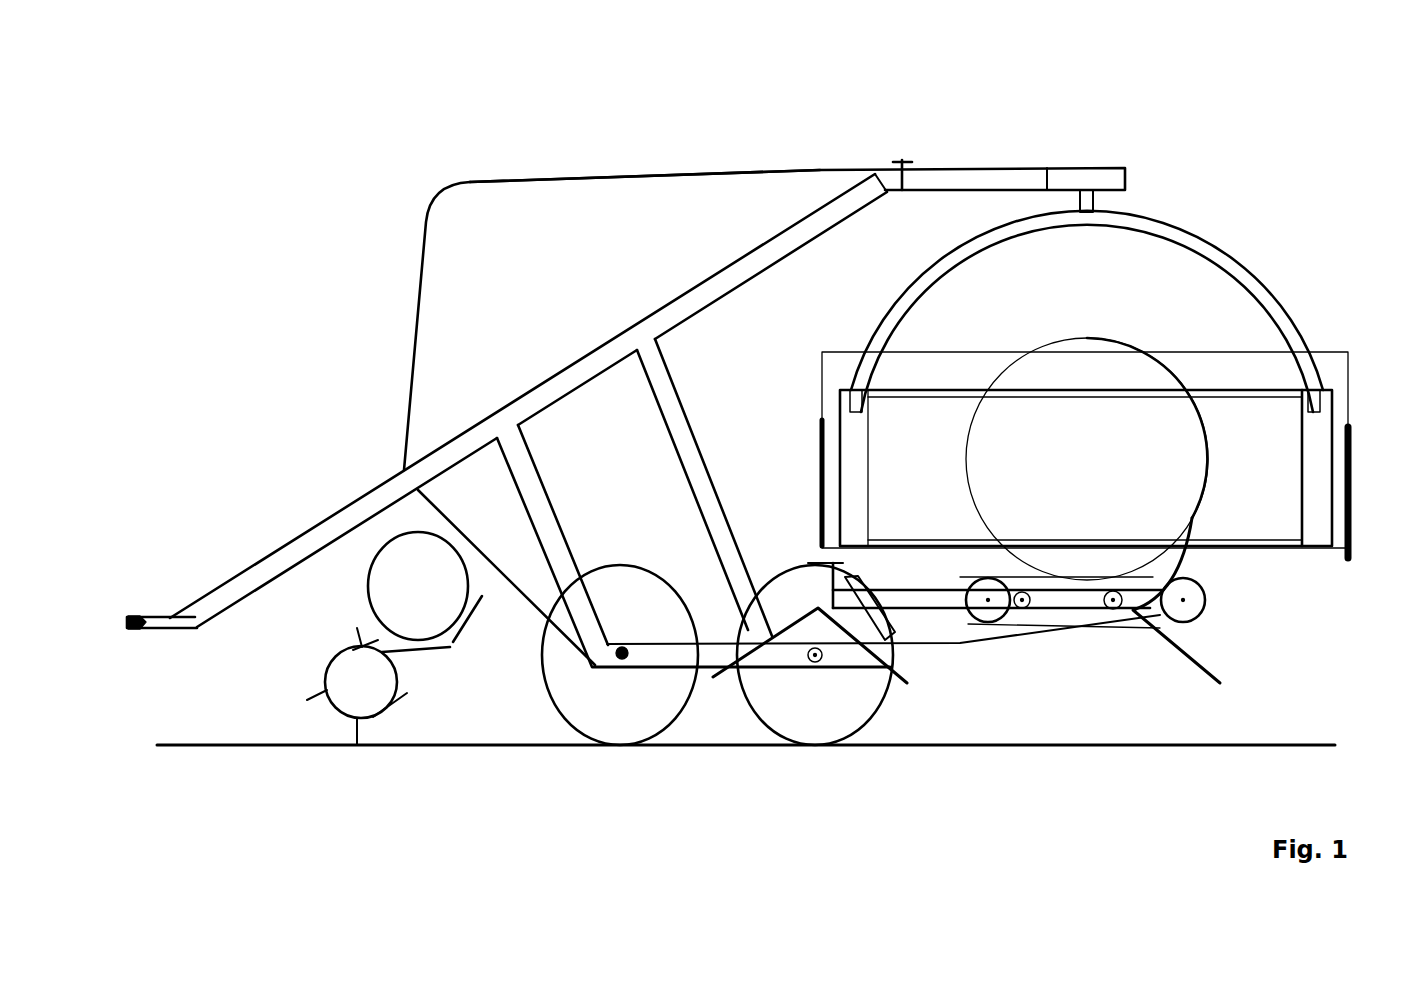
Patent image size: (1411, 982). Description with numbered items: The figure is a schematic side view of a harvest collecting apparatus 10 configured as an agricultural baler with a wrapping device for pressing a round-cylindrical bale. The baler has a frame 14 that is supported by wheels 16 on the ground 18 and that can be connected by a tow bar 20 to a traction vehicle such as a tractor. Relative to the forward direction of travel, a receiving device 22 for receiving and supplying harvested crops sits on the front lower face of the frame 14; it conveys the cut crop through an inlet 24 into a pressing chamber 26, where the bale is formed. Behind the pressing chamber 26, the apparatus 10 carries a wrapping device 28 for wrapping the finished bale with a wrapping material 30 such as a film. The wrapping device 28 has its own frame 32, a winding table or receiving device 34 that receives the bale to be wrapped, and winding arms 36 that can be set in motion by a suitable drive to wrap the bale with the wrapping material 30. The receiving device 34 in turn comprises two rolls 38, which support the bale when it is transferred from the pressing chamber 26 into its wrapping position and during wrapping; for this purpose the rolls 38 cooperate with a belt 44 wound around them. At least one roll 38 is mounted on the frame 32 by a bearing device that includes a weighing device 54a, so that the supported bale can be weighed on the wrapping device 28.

The harvest collecting apparatus 10 is at (411, 272).
The frame 14 is at (405, 352).
The wheels 16 is at (548, 690).
The ground 18 is at (228, 742).
The tow bar 20 is at (262, 552).
The receiving device 22 is at (310, 679).
The inlet 24 is at (499, 598).
The pressing chamber 26 is at (590, 280).
The wrapping device 28 is at (1240, 229).
The wrapping material 30 is at (1237, 458).
The frame 32 is at (978, 647).
The receiving device 34 is at (1220, 609).
The winding arms 36 is at (1292, 290).
The rolls 38 is at (993, 585).
The belt 44 is at (1035, 627).
The weighing device 54a is at (1204, 582).